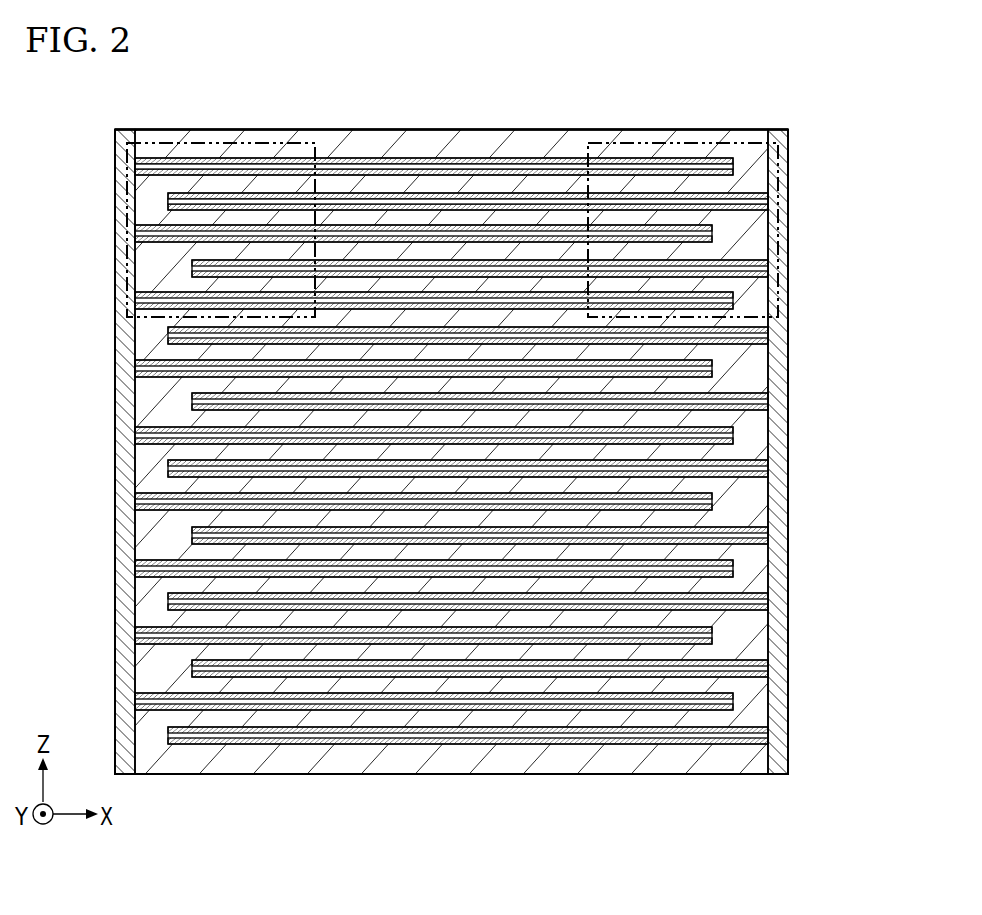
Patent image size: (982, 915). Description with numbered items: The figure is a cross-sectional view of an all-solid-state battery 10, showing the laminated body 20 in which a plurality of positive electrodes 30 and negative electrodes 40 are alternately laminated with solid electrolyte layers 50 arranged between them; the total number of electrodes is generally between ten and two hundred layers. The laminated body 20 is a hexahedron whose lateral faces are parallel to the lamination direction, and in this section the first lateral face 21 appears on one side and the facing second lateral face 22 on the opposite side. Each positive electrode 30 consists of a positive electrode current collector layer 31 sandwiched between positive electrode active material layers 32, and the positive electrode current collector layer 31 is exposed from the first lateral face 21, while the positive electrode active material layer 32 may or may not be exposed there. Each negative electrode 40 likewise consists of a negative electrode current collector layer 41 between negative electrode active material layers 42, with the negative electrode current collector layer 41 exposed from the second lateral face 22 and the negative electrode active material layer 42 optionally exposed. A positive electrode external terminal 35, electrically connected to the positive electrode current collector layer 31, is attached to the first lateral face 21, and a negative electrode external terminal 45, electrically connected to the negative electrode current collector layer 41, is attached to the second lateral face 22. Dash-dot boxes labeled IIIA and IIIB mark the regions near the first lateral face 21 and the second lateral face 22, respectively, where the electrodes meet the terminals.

The all-solid-state battery 10 is at (740, 115).
The laminated body 20 is at (589, 118).
The first lateral face 21 is at (134, 140).
The second lateral face 22 is at (785, 143).
The positive electrode 30 is at (527, 393).
The positive electrode current collector layer 31 is at (733, 168).
The positive electrode active material layer 32 is at (733, 164).
The positive electrode external terminal 35 is at (122, 410).
The negative electrode 40 is at (390, 410).
The negative electrode current collector layer 41 is at (168, 202).
The negative electrode active material layer 42 is at (168, 196).
The negative electrode external terminal 45 is at (778, 362).
The solid electrolyte layer 50 is at (350, 757).
The section region IIIA is at (133, 290).
The section region IIIB is at (768, 283).